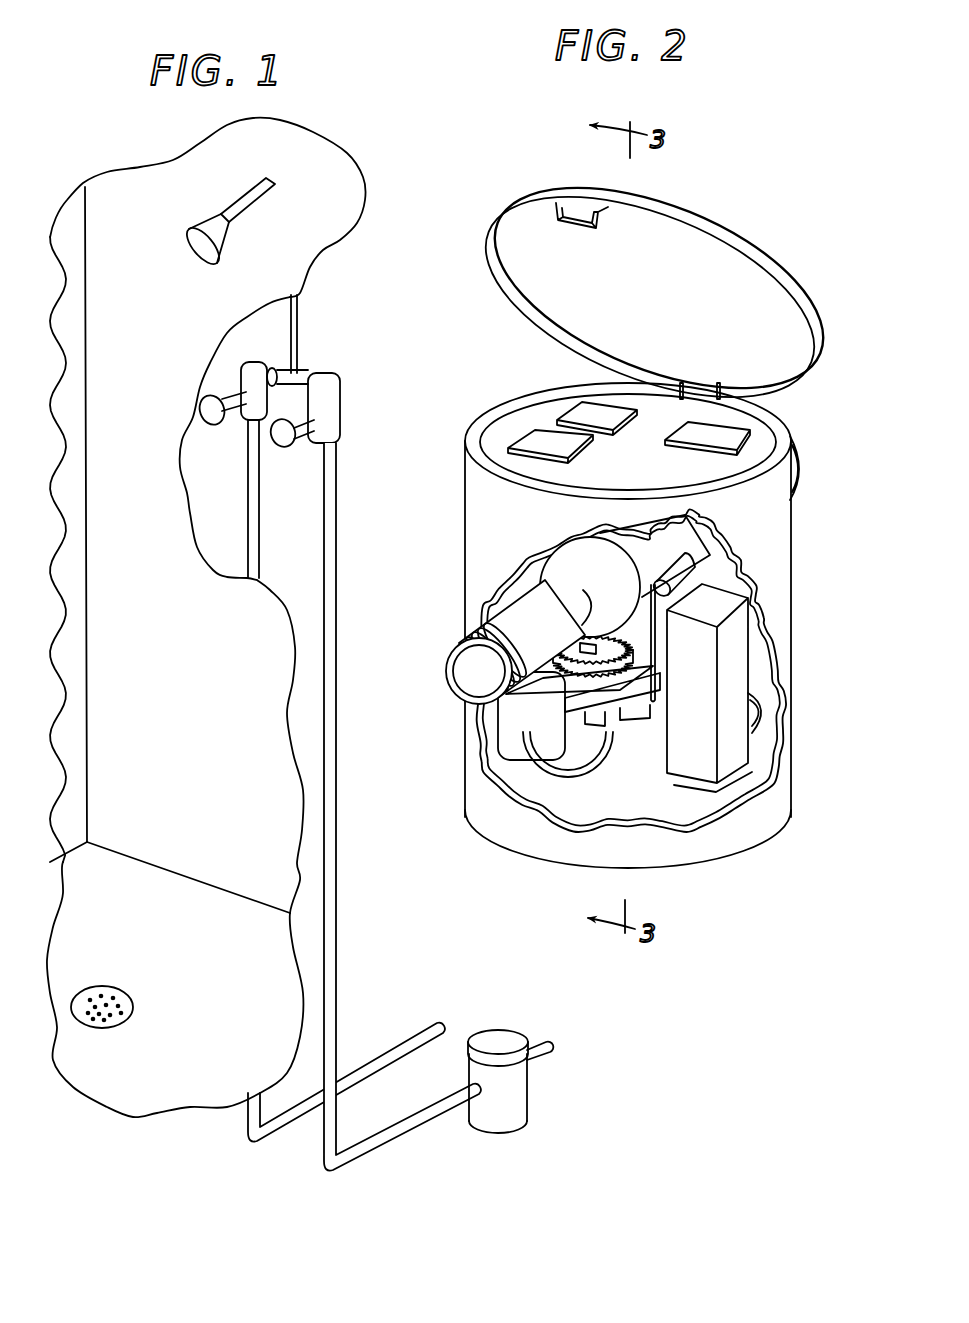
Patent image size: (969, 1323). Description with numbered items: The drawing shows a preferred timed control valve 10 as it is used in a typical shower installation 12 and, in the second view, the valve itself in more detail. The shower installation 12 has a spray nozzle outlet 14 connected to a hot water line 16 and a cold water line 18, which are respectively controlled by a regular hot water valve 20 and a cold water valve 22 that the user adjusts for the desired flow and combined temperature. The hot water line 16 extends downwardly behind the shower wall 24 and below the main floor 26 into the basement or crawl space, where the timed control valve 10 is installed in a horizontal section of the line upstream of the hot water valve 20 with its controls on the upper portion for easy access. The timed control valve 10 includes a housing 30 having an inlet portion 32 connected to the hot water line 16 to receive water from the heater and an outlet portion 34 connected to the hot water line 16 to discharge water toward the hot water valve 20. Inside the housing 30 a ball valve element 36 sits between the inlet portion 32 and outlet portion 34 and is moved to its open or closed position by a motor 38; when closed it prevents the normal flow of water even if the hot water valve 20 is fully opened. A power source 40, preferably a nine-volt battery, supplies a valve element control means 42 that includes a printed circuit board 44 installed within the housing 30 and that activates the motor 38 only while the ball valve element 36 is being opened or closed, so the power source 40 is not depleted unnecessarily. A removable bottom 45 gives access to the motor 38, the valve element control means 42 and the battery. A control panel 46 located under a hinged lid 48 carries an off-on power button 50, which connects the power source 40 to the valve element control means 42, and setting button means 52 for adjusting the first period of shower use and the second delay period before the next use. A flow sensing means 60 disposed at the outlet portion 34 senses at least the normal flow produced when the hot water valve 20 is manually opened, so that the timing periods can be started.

In FIG. 1, the timed control valve 10 is at (498, 1010).
In FIG. 2, the timed control valve 10 is at (715, 183).
In FIG. 1, the shower installation 12 is at (355, 674).
In FIG. 1, the spray nozzle outlet 14 is at (253, 193).
In FIG. 1, the hot water line 16 is at (335, 557).
In FIG. 1, the cold water line 18 is at (257, 500).
In FIG. 1, the hot water valve 20 is at (327, 407).
In FIG. 1, the cold water valve 22 is at (247, 378).
In FIG. 1, the shower wall 24 is at (275, 662).
In FIG. 1, the main floor 26 is at (268, 948).
In FIG. 2, the housing 30 is at (790, 574).
In FIG. 2, the inlet portion 32 is at (516, 610).
In FIG. 2, the outlet portion 34 is at (805, 458).
In FIG. 2, the ball valve element 36 is at (568, 548).
In FIG. 2, the motor 38 is at (503, 724).
In FIG. 2, the power source 40 is at (738, 661).
In FIG. 2, the valve element control means 42 is at (636, 760).
In FIG. 2, the printed circuit board 44 is at (757, 693).
In FIG. 2, the removable bottom 45 is at (709, 789).
In FIG. 2, the control panel 46 is at (722, 415).
In FIG. 2, the hinged lid 48 is at (750, 253).
In FIG. 2, the off-on power button 50 is at (748, 430).
In FIG. 2, the setting button means 52 is at (544, 379).
In FIG. 2, the flow sensing means 60 is at (705, 563).